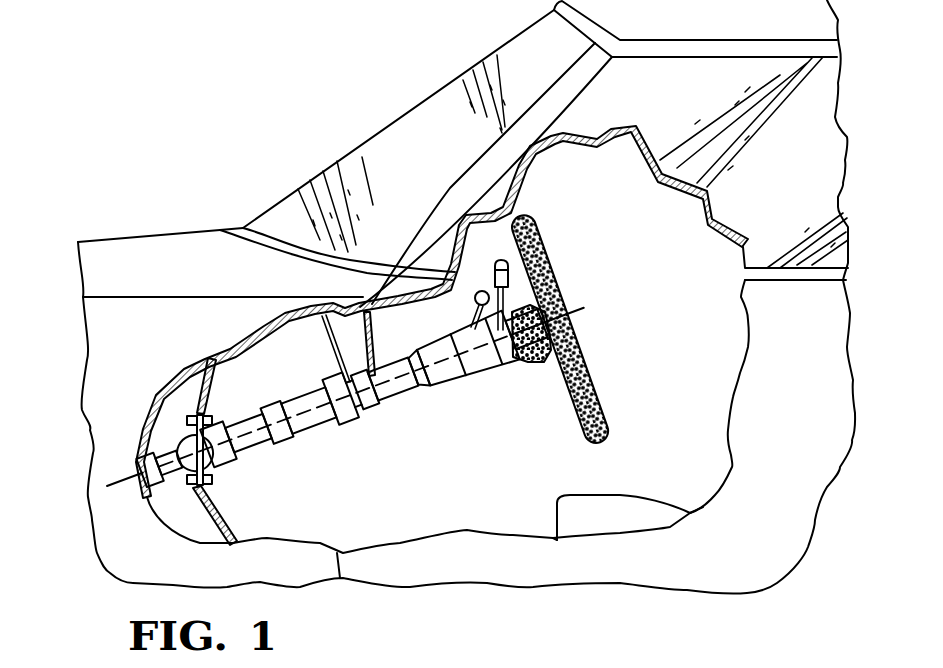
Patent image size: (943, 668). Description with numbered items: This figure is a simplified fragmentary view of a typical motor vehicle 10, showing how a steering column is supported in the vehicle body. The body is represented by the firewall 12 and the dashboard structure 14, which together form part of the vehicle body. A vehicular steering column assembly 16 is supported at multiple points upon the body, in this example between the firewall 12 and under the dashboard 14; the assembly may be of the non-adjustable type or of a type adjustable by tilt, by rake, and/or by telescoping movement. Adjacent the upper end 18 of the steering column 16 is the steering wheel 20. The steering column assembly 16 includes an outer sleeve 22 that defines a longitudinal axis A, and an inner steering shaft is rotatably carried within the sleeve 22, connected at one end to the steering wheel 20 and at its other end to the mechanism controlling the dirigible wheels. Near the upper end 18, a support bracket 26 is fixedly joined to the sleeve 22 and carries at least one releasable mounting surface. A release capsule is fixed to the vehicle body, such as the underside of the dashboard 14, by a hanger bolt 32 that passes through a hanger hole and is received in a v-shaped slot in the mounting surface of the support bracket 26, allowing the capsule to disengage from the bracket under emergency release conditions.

The motor vehicle 10 is at (192, 229).
The firewall 12 is at (186, 372).
The dashboard structure 14 is at (380, 262).
The steering column assembly 16 is at (469, 389).
The upper end 18 is at (548, 375).
The steering wheel 20 is at (519, 212).
The outer sleeve 22 is at (452, 343).
The support bracket 26 is at (382, 409).
The hanger bolt 32 is at (340, 296).
The longitudinal axis A is at (127, 470).